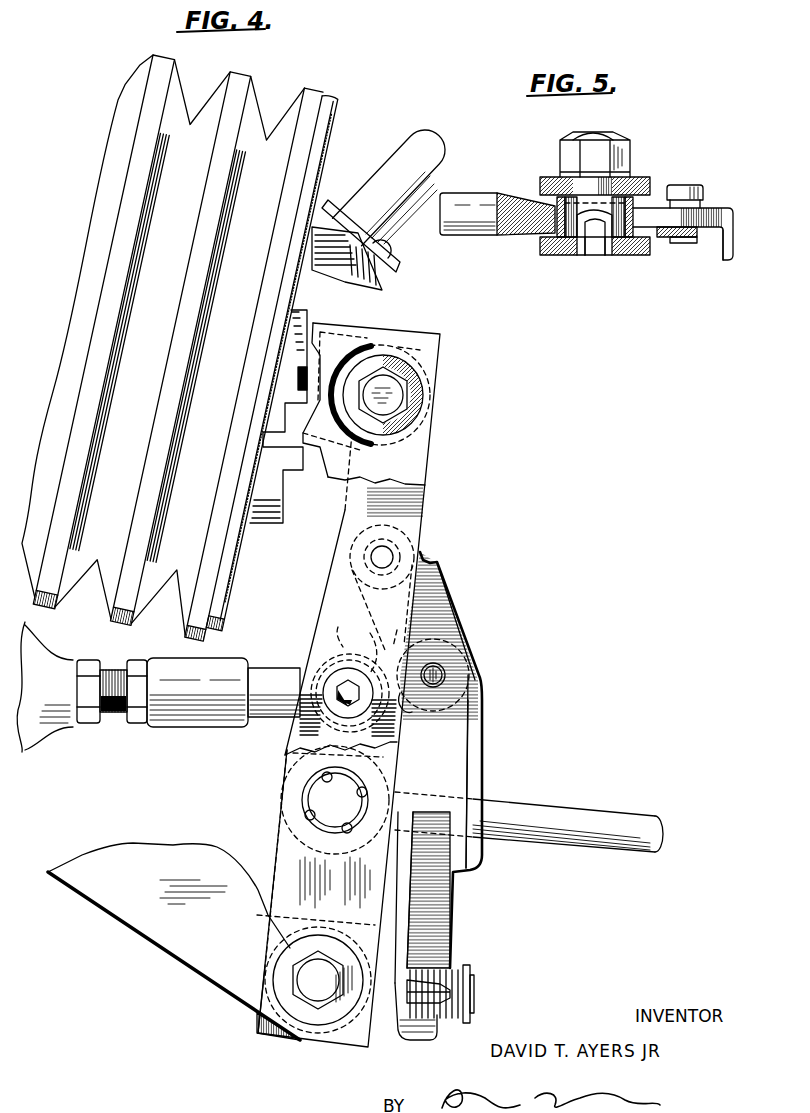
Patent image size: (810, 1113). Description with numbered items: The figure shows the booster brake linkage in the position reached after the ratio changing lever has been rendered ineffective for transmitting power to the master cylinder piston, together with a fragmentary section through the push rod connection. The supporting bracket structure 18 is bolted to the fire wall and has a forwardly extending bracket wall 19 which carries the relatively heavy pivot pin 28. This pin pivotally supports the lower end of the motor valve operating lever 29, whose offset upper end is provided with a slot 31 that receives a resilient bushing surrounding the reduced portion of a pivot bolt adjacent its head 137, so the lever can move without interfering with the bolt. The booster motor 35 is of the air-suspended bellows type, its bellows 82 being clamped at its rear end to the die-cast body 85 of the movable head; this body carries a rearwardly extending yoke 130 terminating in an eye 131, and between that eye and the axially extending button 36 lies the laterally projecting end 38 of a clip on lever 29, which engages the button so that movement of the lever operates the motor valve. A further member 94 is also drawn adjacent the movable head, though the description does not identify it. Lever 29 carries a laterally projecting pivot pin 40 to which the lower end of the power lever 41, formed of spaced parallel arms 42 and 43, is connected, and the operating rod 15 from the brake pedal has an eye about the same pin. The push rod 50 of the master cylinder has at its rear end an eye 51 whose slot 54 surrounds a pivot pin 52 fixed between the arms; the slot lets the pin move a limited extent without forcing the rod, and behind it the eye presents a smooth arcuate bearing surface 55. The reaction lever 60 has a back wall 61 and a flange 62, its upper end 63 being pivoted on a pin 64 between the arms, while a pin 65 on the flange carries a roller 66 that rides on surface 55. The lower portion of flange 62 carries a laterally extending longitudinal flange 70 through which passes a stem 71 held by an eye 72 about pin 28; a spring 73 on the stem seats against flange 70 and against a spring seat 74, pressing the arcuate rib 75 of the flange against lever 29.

In FIG. 4, the operating rod 15 is at (603, 790).
In FIG. 4, the supporting bracket structure 18 is at (151, 953).
In FIG. 4, the bracket wall 19 is at (195, 970).
In FIG. 4, the pivot pin 28 is at (330, 991).
In FIG. 4, the motor valve operating lever 29 is at (413, 465).
In FIG. 4, the slot 31 is at (417, 397).
In FIG. 4, the motor 35 is at (198, 344).
In FIG. 4, the button 36 is at (278, 416).
In FIG. 4, the laterally projecting end 38 is at (356, 260).
In FIG. 4, the pivot pin 40 is at (347, 809).
In FIG. 4, the power lever 41 is at (345, 588).
In FIG. 5, the power lever 41 is at (537, 166).
In FIG. 5, the arm 42 is at (640, 175).
In FIG. 5, the arm 43 is at (557, 260).
In FIG. 4, the push rod 50 is at (237, 670).
In FIG. 5, the push rod 50 is at (480, 237).
In FIG. 4, the eye 51 is at (343, 630).
In FIG. 4, the pivot pin 52 is at (337, 685).
In FIG. 5, the pivot pin 52 is at (567, 257).
In FIG. 4, the slot 54 is at (369, 647).
In FIG. 5, the slot 54 is at (540, 233).
In FIG. 4, the arcuate bearing surface 55 is at (400, 630).
In FIG. 5, the arcuate bearing surface 55 is at (657, 247).
In FIG. 4, the reaction lever 60 is at (496, 733).
In FIG. 5, the reaction lever 60 is at (746, 272).
In FIG. 4, the back wall 61 is at (482, 767).
In FIG. 5, the back wall 61 is at (727, 273).
In FIG. 4, the flange 62 is at (460, 720).
In FIG. 5, the flange 62 is at (715, 240).
In FIG. 4, the upper end of the reaction lever 63 is at (425, 515).
In FIG. 4, the pin 64 is at (387, 557).
In FIG. 4, the pin 65 is at (437, 673).
In FIG. 5, the pin 65 is at (683, 243).
In FIG. 4, the roller 66 is at (403, 700).
In FIG. 5, the roller 66 is at (713, 207).
In FIG. 4, the laterally extending longitudinal flange 70 is at (405, 907).
In FIG. 4, the stem 71 is at (423, 990).
In FIG. 4, the eye 72 is at (268, 957).
In FIG. 4, the spring 73 is at (463, 970).
In FIG. 4, the spring seat 74 is at (475, 985).
In FIG. 4, the arcuate rib 75 is at (387, 1007).
In FIG. 4, the bellows 82 is at (212, 95).
In FIG. 4, the body 85 is at (340, 125).
In FIG. 4, the rod 94 is at (433, 157).
In FIG. 4, the yoke 130 is at (385, 338).
In FIG. 4, the eye 131 is at (422, 332).
In FIG. 4, the head 137 is at (390, 408).